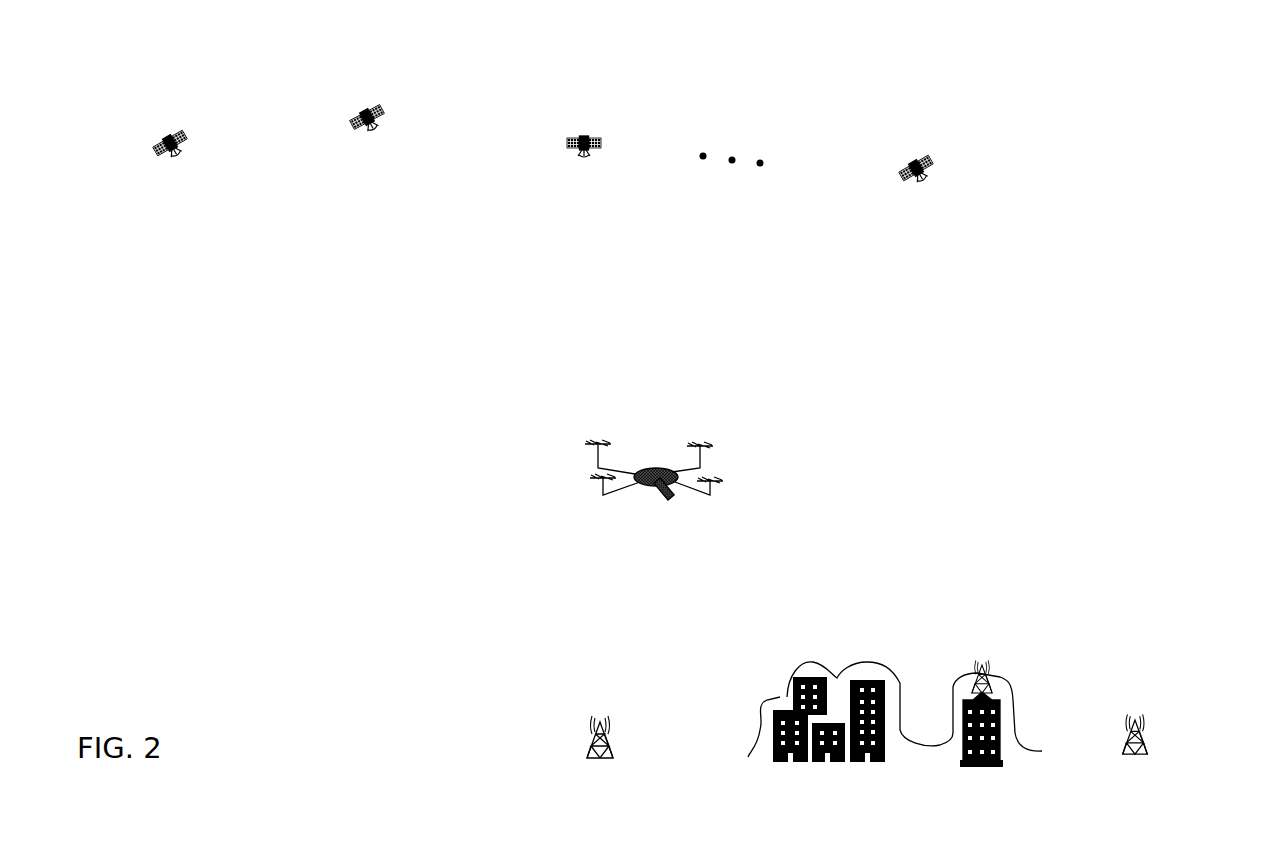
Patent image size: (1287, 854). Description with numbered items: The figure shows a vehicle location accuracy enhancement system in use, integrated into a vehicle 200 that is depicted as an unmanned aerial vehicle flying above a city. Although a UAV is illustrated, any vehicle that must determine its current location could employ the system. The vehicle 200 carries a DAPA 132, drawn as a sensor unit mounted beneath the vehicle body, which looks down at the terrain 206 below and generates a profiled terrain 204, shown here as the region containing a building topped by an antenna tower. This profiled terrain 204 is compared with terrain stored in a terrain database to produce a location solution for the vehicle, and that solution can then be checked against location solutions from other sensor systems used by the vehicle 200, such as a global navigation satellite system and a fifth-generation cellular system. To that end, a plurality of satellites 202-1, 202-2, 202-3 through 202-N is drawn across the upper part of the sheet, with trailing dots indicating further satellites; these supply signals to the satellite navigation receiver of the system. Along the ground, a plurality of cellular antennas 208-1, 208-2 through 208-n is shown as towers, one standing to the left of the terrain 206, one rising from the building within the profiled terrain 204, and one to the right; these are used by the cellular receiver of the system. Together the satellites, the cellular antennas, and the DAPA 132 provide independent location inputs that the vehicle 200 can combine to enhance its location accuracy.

The vehicle 200 is at (650, 450).
The DAPA 132 is at (672, 492).
The satellite 202-1 is at (170, 175).
The satellite 202-2 is at (370, 137).
The satellite 202-3 is at (580, 157).
The satellite 202-N is at (917, 195).
The profiled terrain 204 is at (990, 694).
The terrain 206 is at (780, 697).
The 5G antenna 208-1 is at (590, 742).
The 5G antenna 208-2 is at (963, 665).
The 5G antenna 208-n is at (1153, 737).